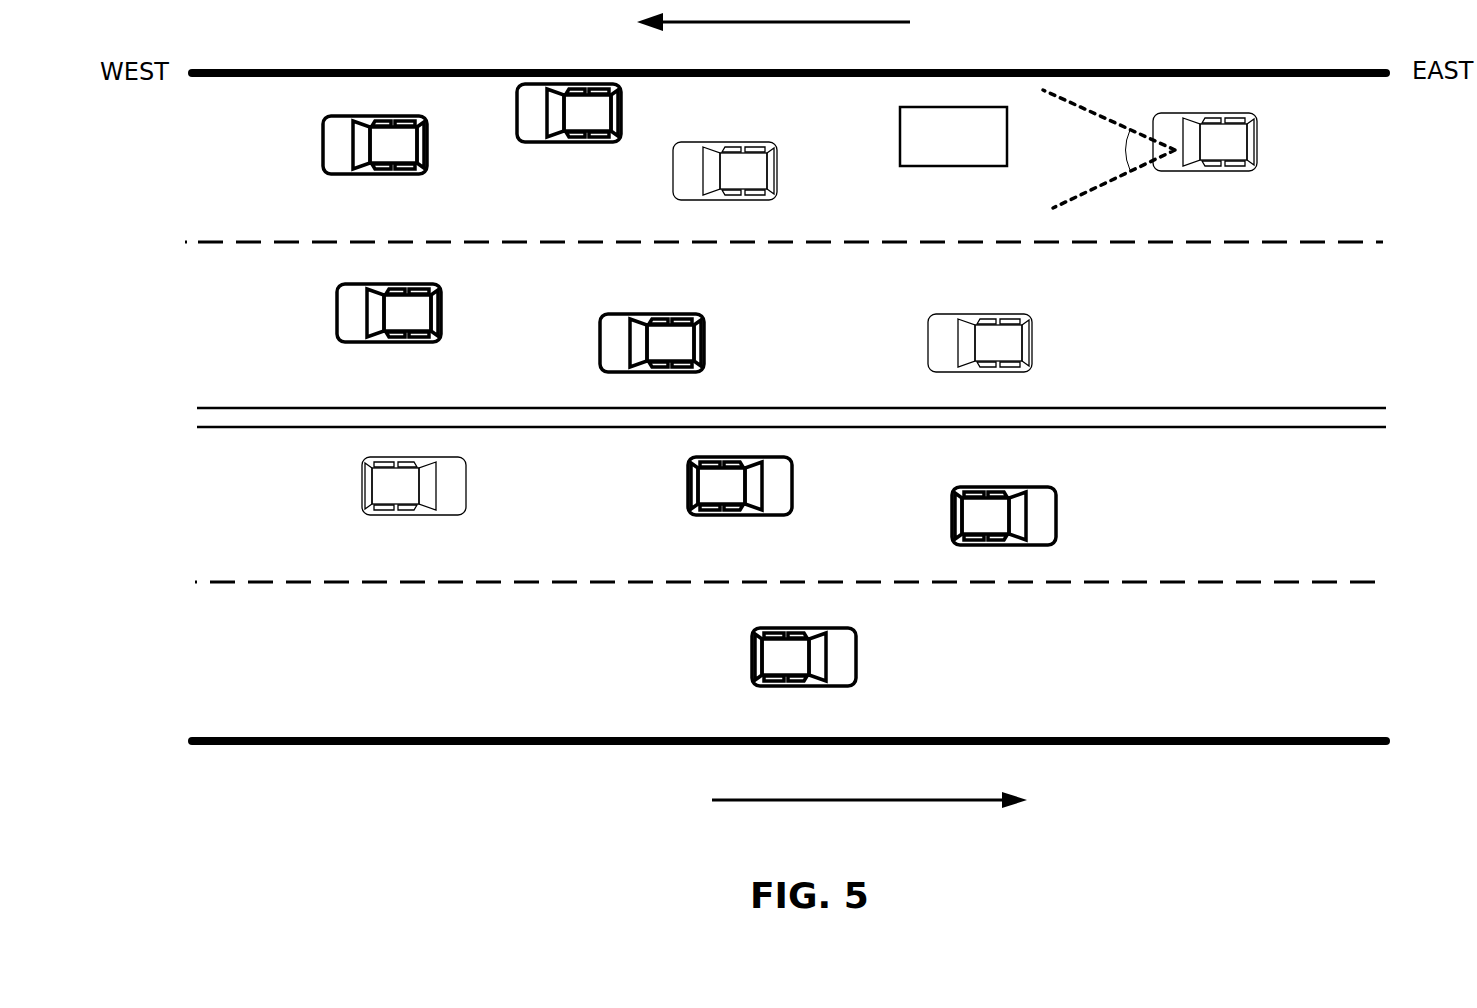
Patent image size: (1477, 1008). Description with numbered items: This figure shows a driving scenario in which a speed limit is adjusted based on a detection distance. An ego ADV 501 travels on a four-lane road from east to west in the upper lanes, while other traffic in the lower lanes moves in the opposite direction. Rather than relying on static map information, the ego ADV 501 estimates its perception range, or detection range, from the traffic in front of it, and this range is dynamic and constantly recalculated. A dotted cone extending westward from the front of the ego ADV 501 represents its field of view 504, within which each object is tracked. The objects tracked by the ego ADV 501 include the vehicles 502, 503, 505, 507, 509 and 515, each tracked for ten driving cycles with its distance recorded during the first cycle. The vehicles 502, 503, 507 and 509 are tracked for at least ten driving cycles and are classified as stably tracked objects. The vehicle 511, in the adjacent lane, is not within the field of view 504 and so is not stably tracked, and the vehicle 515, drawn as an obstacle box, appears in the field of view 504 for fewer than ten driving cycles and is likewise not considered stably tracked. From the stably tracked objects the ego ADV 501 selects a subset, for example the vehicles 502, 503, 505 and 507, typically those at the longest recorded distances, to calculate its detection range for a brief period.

The ego ADV 501 is at (1205, 154).
The vehicle 502 is at (378, 159).
The vehicle 503 is at (572, 127).
The field of view 504 is at (1051, 164).
The vehicle 505 is at (392, 325).
The vehicle 507 is at (652, 355).
The vehicle 509 is at (727, 185).
The vehicle 511 is at (983, 355).
The vehicle 515 is at (934, 162).